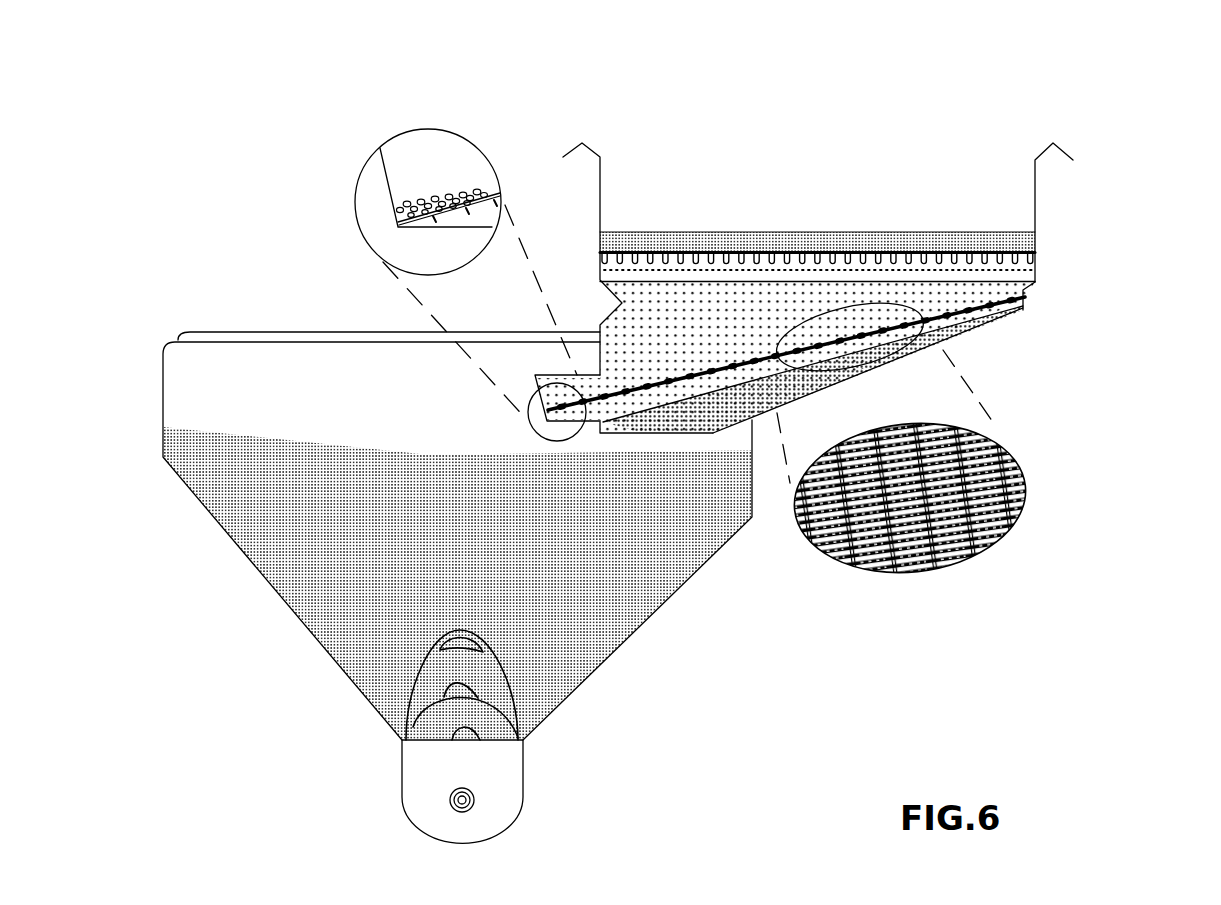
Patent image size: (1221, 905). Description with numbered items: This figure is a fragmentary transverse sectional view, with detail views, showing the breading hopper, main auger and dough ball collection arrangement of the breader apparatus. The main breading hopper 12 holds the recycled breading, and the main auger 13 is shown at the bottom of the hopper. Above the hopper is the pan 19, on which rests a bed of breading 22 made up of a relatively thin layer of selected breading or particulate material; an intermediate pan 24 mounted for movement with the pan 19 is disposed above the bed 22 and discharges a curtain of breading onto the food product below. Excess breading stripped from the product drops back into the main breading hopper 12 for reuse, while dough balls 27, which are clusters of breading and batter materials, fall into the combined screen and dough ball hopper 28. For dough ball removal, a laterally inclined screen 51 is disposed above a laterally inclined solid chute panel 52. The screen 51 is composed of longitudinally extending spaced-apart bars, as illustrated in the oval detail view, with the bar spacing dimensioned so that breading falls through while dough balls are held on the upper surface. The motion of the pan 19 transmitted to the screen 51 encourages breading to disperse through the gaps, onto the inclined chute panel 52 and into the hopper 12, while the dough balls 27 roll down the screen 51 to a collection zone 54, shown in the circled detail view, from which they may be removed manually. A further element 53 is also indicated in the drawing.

The main breading hopper 12 is at (280, 547).
The main auger 13 is at (495, 728).
The pan 19 is at (1035, 203).
The bed of breading 22 is at (747, 233).
The intermediate pan 24 is at (1035, 253).
The dough balls 27 is at (415, 195).
The combined screen and dough ball hopper 28 is at (555, 395).
The laterally inclined screen 51 is at (1027, 297).
The laterally inclined solid chute panel 52 is at (970, 330).
The bottom plate 53 is at (657, 433).
The collection zone 54 is at (380, 148).